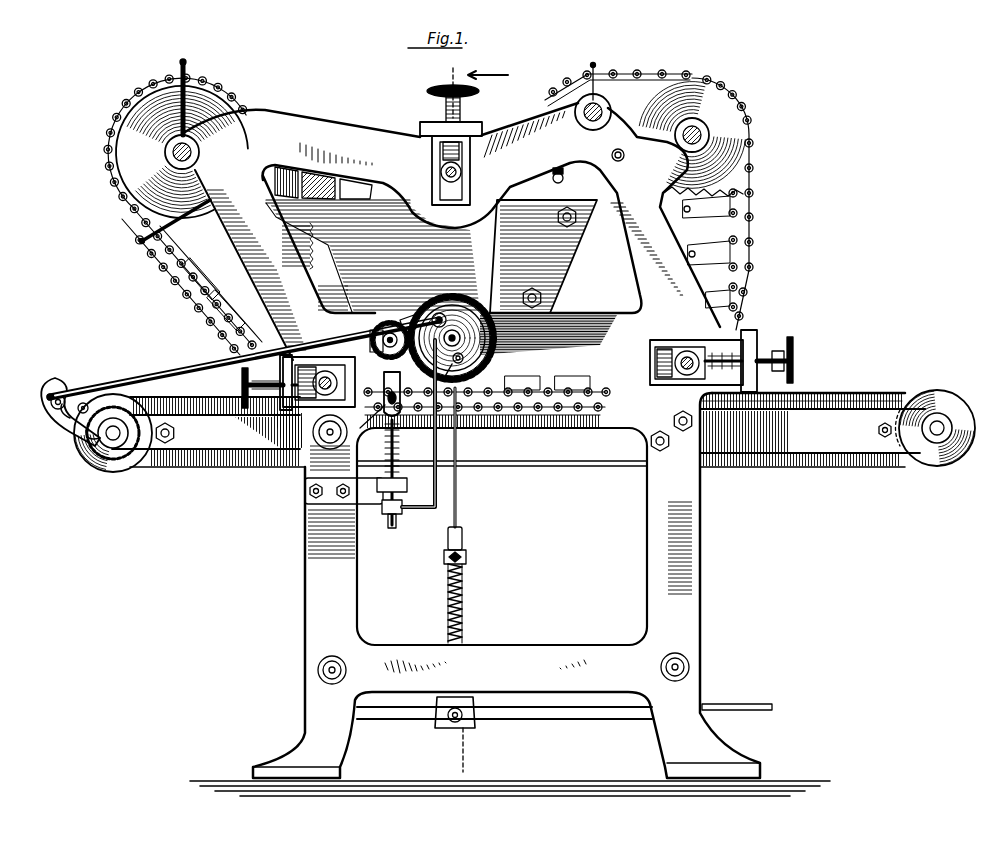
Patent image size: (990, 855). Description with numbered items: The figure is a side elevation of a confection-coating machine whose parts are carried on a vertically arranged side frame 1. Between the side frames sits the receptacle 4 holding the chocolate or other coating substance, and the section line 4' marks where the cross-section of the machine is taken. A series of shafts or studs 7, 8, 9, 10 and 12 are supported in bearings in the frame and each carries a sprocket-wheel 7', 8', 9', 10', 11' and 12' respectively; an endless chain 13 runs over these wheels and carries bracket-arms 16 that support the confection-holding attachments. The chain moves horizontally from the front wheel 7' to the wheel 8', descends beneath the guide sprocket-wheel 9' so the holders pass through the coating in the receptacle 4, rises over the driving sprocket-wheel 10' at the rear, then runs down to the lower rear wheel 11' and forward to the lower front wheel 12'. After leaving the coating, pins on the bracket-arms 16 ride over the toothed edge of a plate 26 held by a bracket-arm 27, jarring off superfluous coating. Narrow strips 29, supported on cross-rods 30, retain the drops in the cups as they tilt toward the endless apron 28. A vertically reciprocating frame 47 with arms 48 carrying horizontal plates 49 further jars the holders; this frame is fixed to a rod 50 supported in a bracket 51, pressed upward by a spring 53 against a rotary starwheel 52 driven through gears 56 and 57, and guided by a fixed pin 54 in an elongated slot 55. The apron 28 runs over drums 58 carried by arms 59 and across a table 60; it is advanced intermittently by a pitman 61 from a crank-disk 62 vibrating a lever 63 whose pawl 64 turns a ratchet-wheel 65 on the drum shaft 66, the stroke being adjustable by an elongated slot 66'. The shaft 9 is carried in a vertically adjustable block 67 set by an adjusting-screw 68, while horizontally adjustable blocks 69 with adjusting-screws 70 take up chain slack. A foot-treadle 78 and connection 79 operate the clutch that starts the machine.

The side frame 1 is at (507, 449).
The receptacle 4 is at (533, 256).
The section line 4' is at (480, 412).
The shaft or stud 7 is at (680, 141).
The sprocket-wheel 7' is at (712, 138).
The shaft or stud 8 is at (593, 124).
The sprocket-wheel 8' is at (589, 74).
The shaft 9 is at (432, 166).
The guide sprocket-wheel 9' is at (442, 163).
The shaft 10 is at (196, 152).
The driving sprocket-wheel 10' is at (182, 152).
The lower rear sprocket-wheel 11' is at (288, 425).
The shaft or stud 12 is at (506, 361).
The lower front sprocket-wheel 12' is at (688, 360).
The endless chain 13 is at (116, 110).
The bracket-arm 16 is at (215, 318).
The toothed plate 26 is at (318, 182).
The bracket-arm 27 is at (355, 183).
The endless apron 28 is at (178, 385).
The strip or plate 29 is at (232, 250).
The cross-rod 30 is at (120, 243).
The vertically-reciprocating frame 47 is at (425, 512).
The arm 48 is at (442, 488).
The horizontally-arranged plate 49 is at (497, 412).
The vertically-arranged rod 50 is at (394, 528).
The bracket 51 is at (408, 324).
The rotary starwheel 52 is at (386, 320).
The spring 53 is at (398, 452).
The fixed pin 54 is at (384, 404).
The elongated slot 55 is at (372, 342).
The gear 56 is at (444, 312).
The gear 57 is at (406, 318).
The drum or pulley 58 is at (108, 471).
The arm 59 is at (518, 438).
The table 60 is at (565, 420).
The pitman 61 is at (86, 404).
The crank-disk 62 is at (466, 306).
The lever 63 is at (68, 420).
The pawl 64 is at (62, 396).
The ratchet-wheel 65 is at (92, 455).
The shaft 66 is at (70, 448).
The elongated slot 66' is at (41, 413).
The vertically-adjustable block 67 is at (462, 168).
The adjusting-screw 68 is at (460, 110).
The horizontally-adjustable block 69 is at (308, 413).
The adjusting-screw 70 is at (240, 384).
The foot-treadle 78 is at (585, 716).
The connection 79 is at (462, 604).